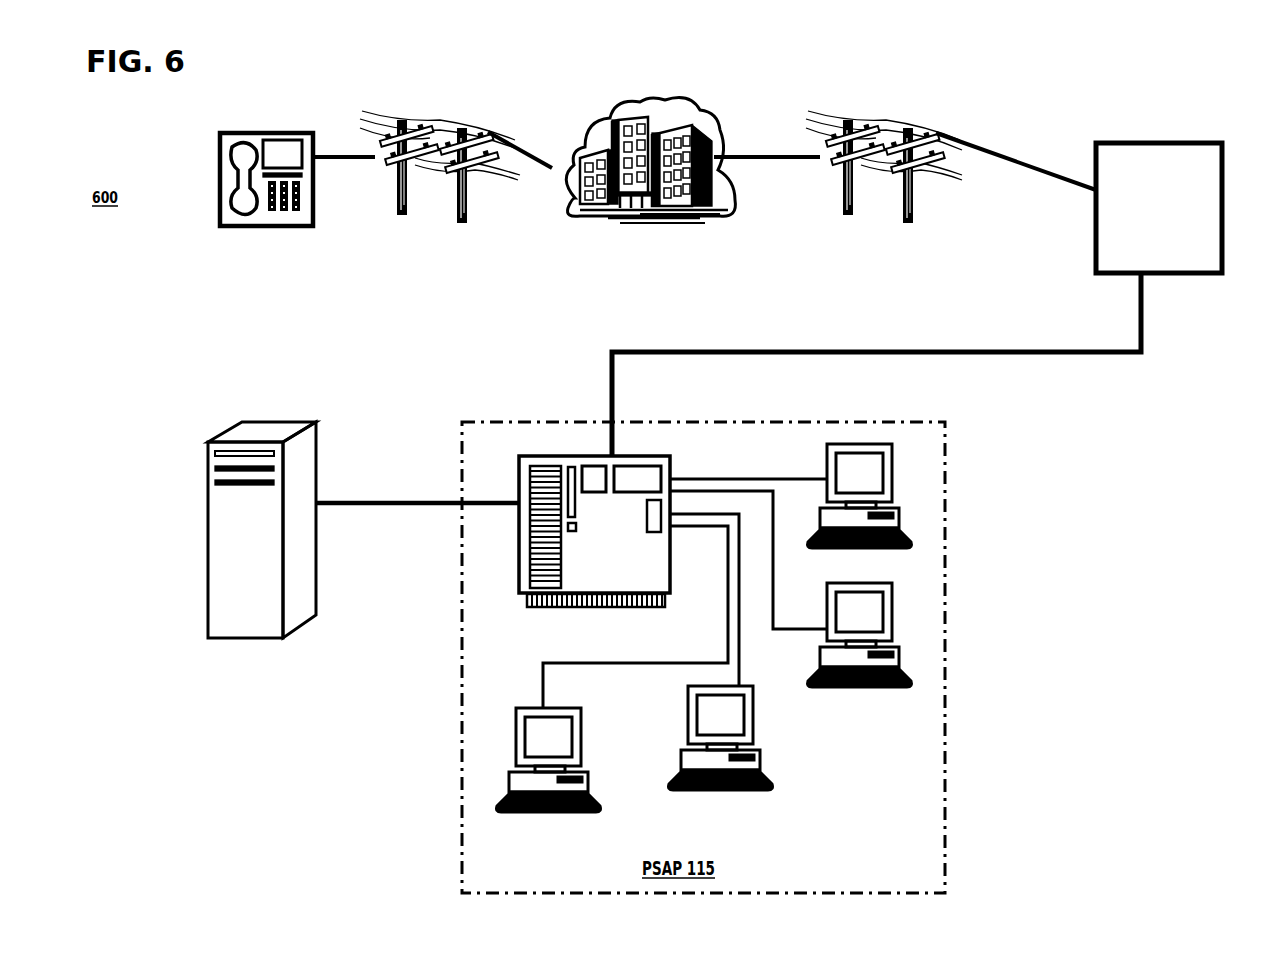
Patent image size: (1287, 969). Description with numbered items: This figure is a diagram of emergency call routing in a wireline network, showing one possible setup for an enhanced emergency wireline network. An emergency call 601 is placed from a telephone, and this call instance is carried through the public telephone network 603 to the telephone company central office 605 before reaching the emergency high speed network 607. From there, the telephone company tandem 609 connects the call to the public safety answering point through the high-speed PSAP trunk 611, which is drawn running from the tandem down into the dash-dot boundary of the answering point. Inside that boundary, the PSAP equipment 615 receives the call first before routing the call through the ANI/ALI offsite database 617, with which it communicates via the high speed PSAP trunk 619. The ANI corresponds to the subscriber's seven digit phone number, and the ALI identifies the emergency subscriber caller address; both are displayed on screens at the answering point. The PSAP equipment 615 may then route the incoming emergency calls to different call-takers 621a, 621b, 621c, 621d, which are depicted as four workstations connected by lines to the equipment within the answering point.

The 9-1-1 call 601 is at (279, 265).
The public telephone network 603 is at (445, 265).
The telephone company central office 605 is at (654, 265).
The 911 high speed network 607 is at (894, 265).
The telephone company tandem 609 is at (1261, 226).
The high-speed PSAP trunk 611 is at (884, 336).
The 911 PSAP equipment 615 is at (605, 640).
The ANI/ALI offsite database 617 is at (263, 670).
The high speed PSAP trunk 619 is at (753, 466).
The 911 call-taker 621a is at (873, 570).
The 911 call-taker 621b is at (873, 718).
The 911 call-taker 621c is at (740, 823).
The 911 call-taker 621d is at (564, 848).